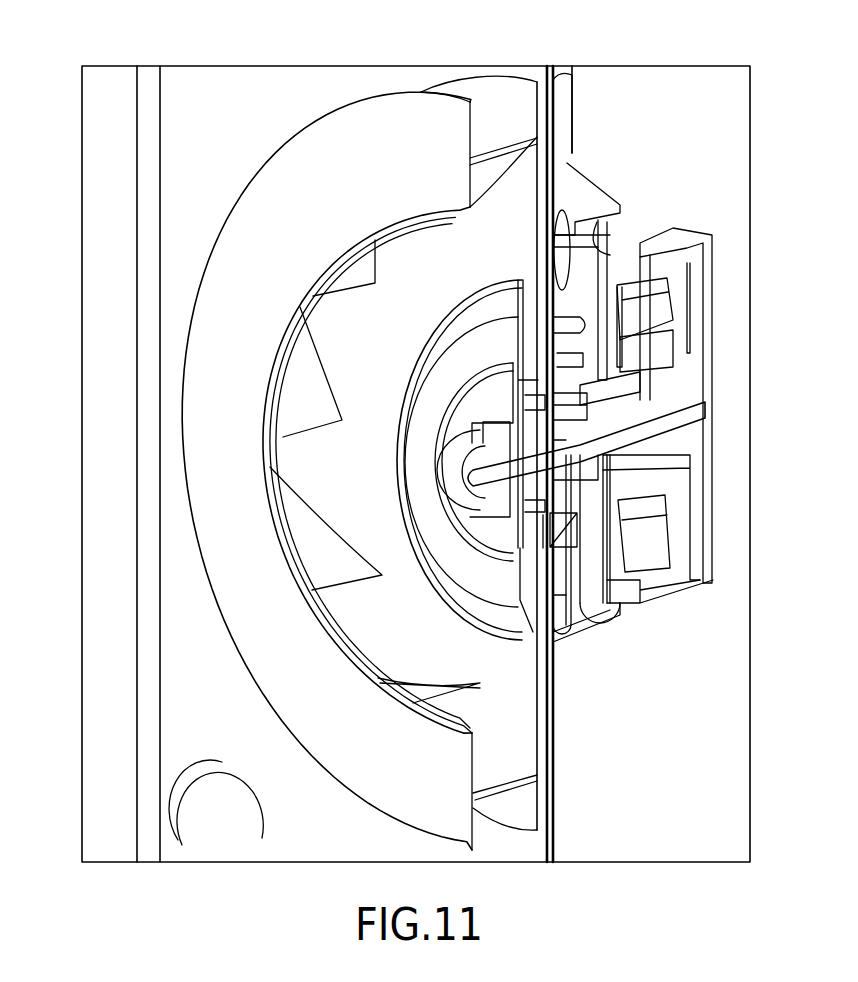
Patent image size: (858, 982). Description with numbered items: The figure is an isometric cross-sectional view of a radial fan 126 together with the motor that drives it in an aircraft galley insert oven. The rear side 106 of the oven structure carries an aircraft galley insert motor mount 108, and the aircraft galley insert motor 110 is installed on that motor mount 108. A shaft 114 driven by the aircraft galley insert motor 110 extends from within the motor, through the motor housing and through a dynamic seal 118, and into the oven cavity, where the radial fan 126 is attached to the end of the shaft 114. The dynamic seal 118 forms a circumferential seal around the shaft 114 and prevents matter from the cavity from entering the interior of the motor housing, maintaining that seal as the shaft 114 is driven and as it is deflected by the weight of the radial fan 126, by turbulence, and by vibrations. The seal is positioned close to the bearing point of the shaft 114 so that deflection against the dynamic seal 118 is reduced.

The rear side 106 is at (228, 88).
The aircraft galley insert motor mount 108 is at (605, 190).
The aircraft galley insert motor 110 is at (645, 308).
The shaft 114 is at (672, 418).
The dynamic seal 118 is at (665, 365).
The radial fan 126 is at (358, 748).